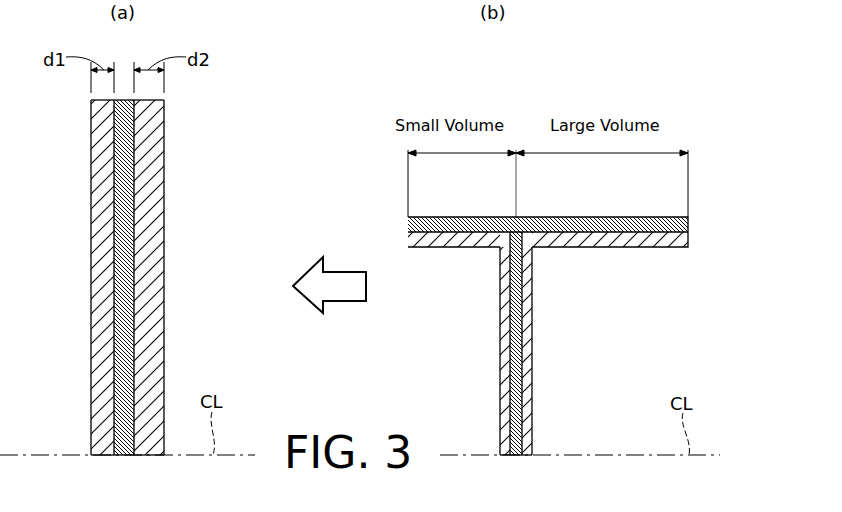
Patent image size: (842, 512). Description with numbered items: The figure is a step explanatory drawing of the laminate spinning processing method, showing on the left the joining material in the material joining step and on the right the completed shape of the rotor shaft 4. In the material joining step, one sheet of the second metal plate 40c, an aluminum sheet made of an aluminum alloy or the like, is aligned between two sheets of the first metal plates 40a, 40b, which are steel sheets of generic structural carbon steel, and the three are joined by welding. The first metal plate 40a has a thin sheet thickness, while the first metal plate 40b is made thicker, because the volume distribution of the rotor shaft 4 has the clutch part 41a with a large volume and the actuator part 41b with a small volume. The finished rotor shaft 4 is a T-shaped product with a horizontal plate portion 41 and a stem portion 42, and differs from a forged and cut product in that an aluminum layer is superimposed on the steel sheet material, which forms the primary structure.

The rotor shaft 4 is at (393, 202).
The first metal plate 40a is at (103, 213).
The first metal plate 40b is at (148, 213).
The second metal plate 40c is at (125, 169).
The plate portion of rotor shaft 41 is at (581, 210).
The clutch part 41a is at (600, 226).
The actuator part 41b is at (458, 226).
The stem portion of rotor shaft 42 is at (533, 361).